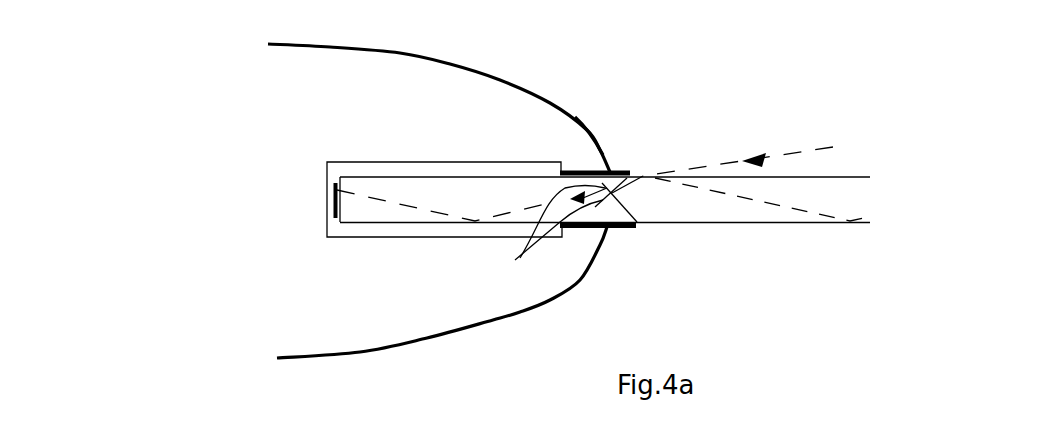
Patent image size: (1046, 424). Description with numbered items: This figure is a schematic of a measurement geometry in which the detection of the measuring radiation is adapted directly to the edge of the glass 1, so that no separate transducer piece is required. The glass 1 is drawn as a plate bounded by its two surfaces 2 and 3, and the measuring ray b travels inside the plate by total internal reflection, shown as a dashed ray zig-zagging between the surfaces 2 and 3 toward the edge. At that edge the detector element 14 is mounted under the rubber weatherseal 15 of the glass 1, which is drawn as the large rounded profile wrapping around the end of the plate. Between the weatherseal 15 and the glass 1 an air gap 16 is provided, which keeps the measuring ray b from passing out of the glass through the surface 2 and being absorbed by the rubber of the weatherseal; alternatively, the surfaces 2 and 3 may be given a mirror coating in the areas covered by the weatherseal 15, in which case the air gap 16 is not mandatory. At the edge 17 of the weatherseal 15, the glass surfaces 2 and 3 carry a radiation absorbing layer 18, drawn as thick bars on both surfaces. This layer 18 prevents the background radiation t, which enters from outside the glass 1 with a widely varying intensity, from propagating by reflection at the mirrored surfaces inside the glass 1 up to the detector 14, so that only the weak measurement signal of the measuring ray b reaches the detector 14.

The glass 1 is at (758, 207).
The surface 2 is at (459, 176).
The surface 3 is at (430, 225).
The detector 14 is at (333, 201).
The weatherseal 15 is at (423, 100).
The air gap 16 is at (380, 170).
The edge 17 is at (582, 121).
The radiation absorbing layer 18 is at (617, 172).
The background radiation t is at (762, 152).
The measuring ray b is at (727, 195).